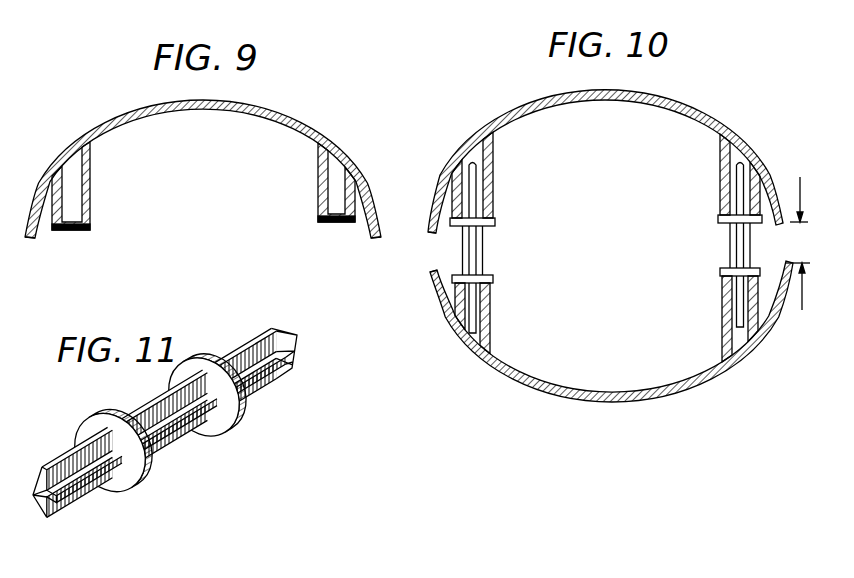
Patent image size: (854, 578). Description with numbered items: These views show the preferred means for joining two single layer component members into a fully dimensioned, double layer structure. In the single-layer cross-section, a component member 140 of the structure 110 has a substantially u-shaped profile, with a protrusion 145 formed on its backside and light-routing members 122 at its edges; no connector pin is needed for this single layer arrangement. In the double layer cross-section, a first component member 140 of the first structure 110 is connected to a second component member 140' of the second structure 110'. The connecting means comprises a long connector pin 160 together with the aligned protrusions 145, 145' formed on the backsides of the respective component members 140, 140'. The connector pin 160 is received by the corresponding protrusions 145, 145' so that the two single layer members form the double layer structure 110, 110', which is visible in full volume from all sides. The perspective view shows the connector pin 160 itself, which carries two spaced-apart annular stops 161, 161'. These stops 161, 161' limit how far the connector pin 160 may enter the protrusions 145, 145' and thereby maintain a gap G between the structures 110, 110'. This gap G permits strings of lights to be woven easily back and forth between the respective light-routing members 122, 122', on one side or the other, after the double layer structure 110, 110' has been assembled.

In FIG. 9, the first structure 110 is at (211, 157).
In FIG. 10, the first structure 110 is at (605, 147).
In FIG. 10, the second structure 110' is at (611, 376).
In FIG. 9, the light-routing member 122 is at (224, 214).
In FIG. 10, the light-routing member 122 is at (377, 249).
In FIG. 10, the light-routing member 122' is at (402, 296).
In FIG. 9, the component member 140 is at (203, 160).
In FIG. 10, the component member 140 is at (605, 155).
In FIG. 10, the second component member 140' is at (611, 343).
In FIG. 9, the protrusion 145 is at (203, 186).
In FIG. 10, the protrusion 145 is at (606, 175).
In FIG. 10, the protrusion 145' is at (606, 319).
In FIG. 10, the connector pin 160 is at (484, 250).
In FIG. 10, the annular stop 161 is at (606, 215).
In FIG. 11, the annular stop 161 is at (229, 425).
In FIG. 10, the annular stop 161' is at (606, 281).
In FIG. 11, the annular stop 161' is at (139, 470).
In FIG. 10, the gap G is at (798, 243).